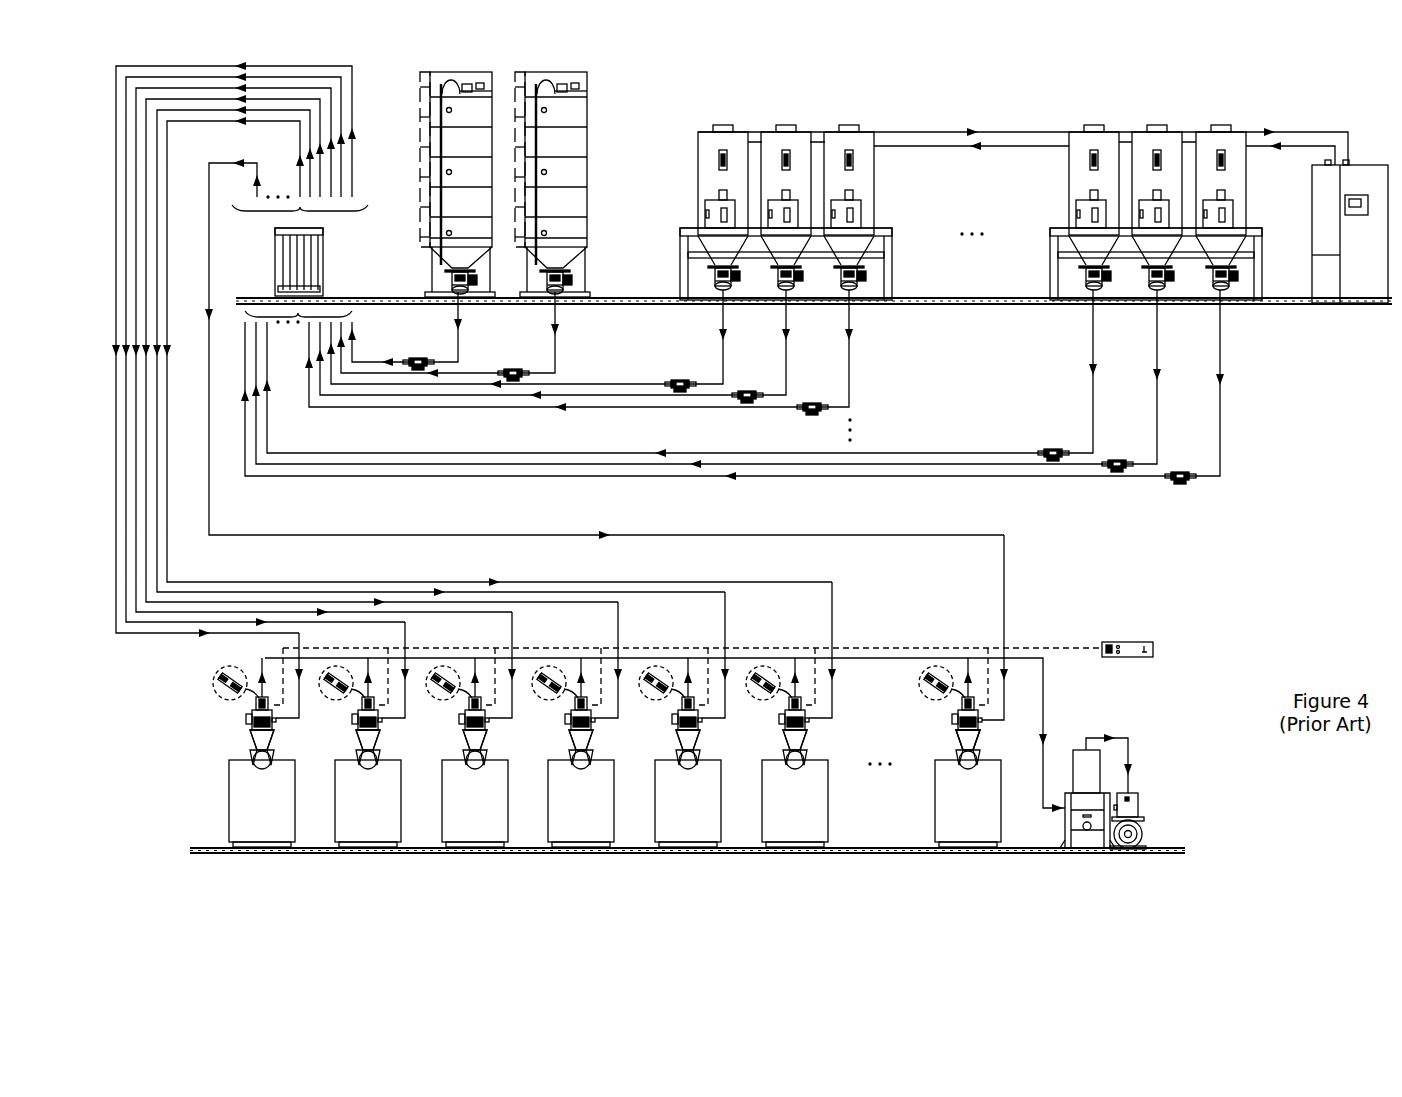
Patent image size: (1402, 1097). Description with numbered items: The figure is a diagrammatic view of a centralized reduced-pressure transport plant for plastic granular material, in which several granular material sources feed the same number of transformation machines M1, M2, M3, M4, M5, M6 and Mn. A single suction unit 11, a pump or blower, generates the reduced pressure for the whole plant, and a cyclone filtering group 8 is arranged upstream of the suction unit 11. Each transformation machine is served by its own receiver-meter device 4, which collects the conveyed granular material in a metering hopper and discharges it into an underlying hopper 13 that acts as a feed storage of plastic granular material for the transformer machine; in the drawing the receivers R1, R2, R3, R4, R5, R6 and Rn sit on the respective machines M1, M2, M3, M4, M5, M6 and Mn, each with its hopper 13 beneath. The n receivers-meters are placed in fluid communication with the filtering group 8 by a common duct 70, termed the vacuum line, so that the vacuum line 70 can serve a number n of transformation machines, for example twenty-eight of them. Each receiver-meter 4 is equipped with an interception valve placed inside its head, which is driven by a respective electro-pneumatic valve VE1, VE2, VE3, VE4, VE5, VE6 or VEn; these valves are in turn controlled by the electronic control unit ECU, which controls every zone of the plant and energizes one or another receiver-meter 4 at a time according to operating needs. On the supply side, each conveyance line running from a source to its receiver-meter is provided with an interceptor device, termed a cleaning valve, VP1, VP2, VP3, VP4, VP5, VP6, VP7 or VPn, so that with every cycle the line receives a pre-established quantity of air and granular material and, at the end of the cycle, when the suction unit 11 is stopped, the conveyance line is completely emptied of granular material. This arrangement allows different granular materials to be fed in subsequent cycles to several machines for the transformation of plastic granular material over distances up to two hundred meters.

The cleaning valve VP1 is at (426, 345).
The cleaning valve VP2 is at (521, 356).
The cleaning valve VP3 is at (688, 367).
The cleaning valve VP4 is at (755, 378).
The cleaning valve VP5 is at (820, 390).
The cleaning valve VP6 is at (1061, 436).
The cleaning valve VP7 is at (1125, 447).
The cleaning valve VPn is at (1188, 459).
The electro-pneumatic valve VE1 is at (237, 717).
The electro-pneumatic valve VE2 is at (343, 717).
The electro-pneumatic valve VE3 is at (450, 717).
The electro-pneumatic valve VE4 is at (556, 717).
The electro-pneumatic valve VE5 is at (663, 717).
The electro-pneumatic valve VE6 is at (770, 717).
The electro-pneumatic valve VEn is at (941, 717).
The receiver 1 R1 is at (272, 728).
The receiver 2 R2 is at (378, 728).
The receiver 3 R3 is at (485, 728).
The receiver 4 R4 is at (591, 728).
The receiver 5 R5 is at (698, 728).
The receiver 6 R6 is at (805, 728).
The receiver n Rn is at (978, 728).
The transformation machine M1 is at (262, 803).
The transformation machine M2 is at (368, 803).
The transformation machine M3 is at (475, 803).
The transformation machine M4 is at (581, 803).
The transformation machine M5 is at (688, 803).
The transformation machine M6 is at (795, 803).
The transformation machine Mn is at (968, 803).
The electronic control unit ECU is at (1153, 645).
The common duct 70 is at (868, 658).
The receiver-meter device 4 is at (990, 704).
The cyclone filtering group 8 is at (1073, 762).
The hopper 13 is at (957, 748).
The suction unit 11 is at (1143, 830).